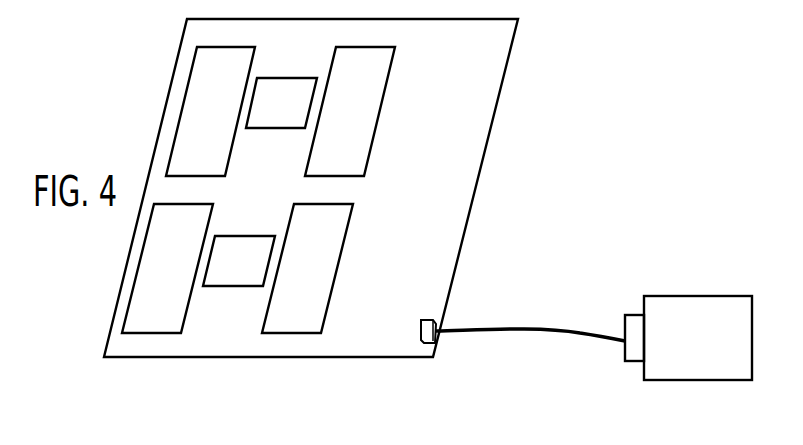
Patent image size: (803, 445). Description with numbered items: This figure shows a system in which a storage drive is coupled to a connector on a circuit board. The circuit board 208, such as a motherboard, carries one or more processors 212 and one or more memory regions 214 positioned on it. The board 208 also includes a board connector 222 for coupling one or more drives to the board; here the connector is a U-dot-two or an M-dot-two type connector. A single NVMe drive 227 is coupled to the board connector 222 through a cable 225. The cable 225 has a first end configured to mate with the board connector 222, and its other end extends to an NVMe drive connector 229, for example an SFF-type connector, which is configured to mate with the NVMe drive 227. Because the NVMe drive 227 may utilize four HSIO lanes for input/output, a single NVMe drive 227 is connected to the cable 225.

The circuit board 208 is at (497, 60).
The processor 212 is at (302, 117).
The memory region 214 is at (229, 124).
The board connector 222 is at (428, 347).
The cable 225 is at (535, 333).
The NVMe drive 227 is at (718, 352).
The NVMe drive connector 229 is at (637, 362).